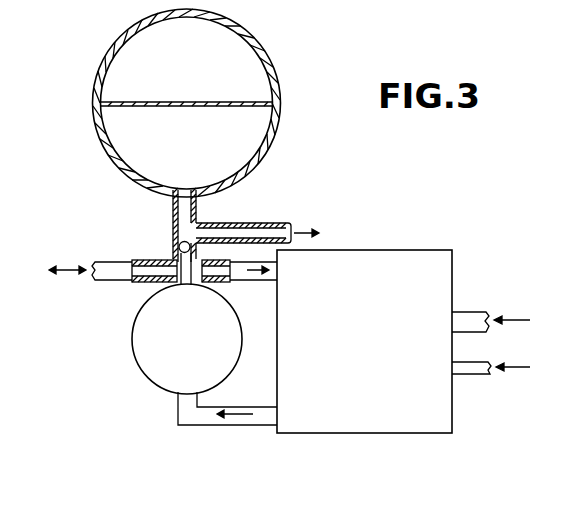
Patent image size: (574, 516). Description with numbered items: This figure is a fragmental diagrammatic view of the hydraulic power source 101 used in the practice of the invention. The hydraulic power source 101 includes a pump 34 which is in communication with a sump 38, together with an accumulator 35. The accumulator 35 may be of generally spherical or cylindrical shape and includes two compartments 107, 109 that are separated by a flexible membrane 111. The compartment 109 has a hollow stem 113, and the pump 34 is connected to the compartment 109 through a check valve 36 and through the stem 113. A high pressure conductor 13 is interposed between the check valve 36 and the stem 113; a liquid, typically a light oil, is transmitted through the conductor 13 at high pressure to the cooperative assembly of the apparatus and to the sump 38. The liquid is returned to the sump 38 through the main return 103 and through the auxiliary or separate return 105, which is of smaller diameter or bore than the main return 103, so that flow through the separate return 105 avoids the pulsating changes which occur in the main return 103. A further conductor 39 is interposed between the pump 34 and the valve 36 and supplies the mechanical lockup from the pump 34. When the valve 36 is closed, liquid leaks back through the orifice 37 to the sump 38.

The hydraulic power source 101 is at (325, 168).
The accumulator 35 is at (268, 75).
The compartment 107 is at (140, 40).
The compartment 109 is at (118, 144).
The flexible membrane 111 is at (142, 100).
The hollow stem 113 is at (181, 213).
The high pressure conductor 13 is at (260, 223).
The check valve 36 is at (179, 246).
The conductor 39 is at (112, 282).
The orifice 37 is at (216, 282).
The pump 34 is at (200, 320).
The sump 38 is at (377, 277).
The main return 103 is at (470, 318).
The auxiliary or separate return 105 is at (462, 374).